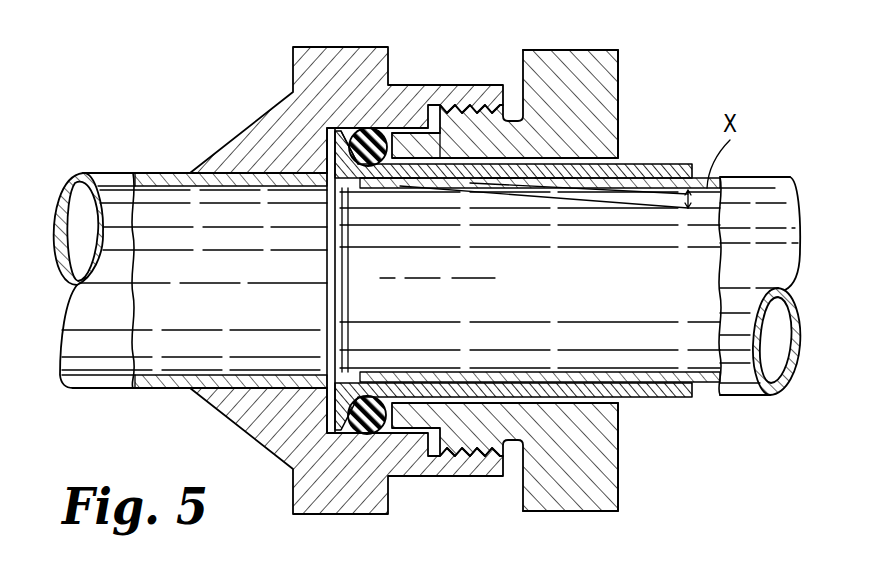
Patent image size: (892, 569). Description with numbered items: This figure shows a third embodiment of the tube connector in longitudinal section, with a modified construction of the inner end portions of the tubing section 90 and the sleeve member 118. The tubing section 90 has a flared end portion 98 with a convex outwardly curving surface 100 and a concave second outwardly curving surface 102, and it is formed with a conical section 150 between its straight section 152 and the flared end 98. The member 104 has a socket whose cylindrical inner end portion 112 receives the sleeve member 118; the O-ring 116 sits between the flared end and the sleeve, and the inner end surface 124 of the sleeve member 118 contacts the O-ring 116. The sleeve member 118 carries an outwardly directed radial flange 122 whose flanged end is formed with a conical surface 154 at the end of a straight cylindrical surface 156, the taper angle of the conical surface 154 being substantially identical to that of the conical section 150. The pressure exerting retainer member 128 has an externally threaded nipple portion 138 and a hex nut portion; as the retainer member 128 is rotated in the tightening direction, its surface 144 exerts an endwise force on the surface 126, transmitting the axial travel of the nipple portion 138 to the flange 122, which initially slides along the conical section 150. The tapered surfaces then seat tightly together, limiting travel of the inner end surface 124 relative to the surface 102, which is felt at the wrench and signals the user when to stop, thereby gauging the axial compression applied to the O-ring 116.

The tubing section 90 is at (630, 192).
The flared end portion 98 is at (336, 228).
The outwardly curving surface 100 is at (333, 195).
The second outwardly curving surface 102 is at (330, 142).
The member 104 is at (292, 95).
The cylindrical inner end portion 112 is at (428, 132).
The O-ring 116 is at (352, 132).
The sleeve member 118 is at (530, 158).
The radial flange 122 is at (503, 84).
The inner end surface 124 is at (378, 131).
The surface 126 is at (440, 138).
The pressure exerting retainer member 128 is at (598, 488).
The externally threaded nipple portion 138 is at (482, 457).
The surface 144 is at (446, 106).
The conical section 150 is at (418, 186).
The straight section 152 is at (553, 178).
The conical surface 154 is at (400, 186).
The straight cylindrical surface 156 is at (500, 178).